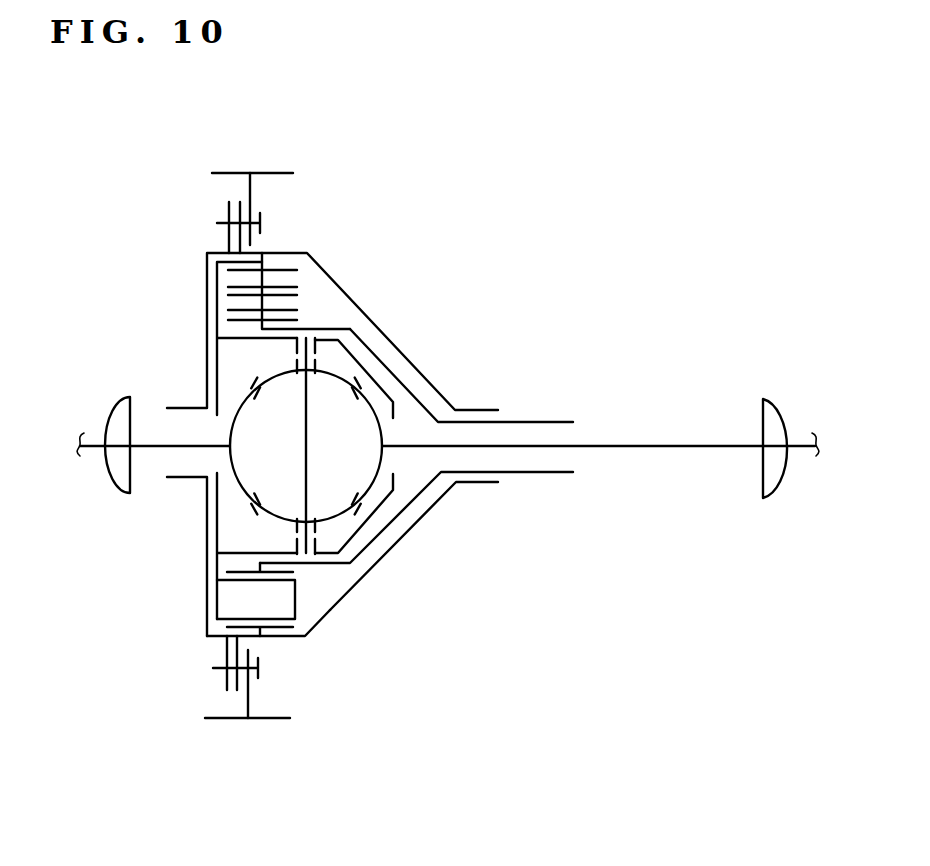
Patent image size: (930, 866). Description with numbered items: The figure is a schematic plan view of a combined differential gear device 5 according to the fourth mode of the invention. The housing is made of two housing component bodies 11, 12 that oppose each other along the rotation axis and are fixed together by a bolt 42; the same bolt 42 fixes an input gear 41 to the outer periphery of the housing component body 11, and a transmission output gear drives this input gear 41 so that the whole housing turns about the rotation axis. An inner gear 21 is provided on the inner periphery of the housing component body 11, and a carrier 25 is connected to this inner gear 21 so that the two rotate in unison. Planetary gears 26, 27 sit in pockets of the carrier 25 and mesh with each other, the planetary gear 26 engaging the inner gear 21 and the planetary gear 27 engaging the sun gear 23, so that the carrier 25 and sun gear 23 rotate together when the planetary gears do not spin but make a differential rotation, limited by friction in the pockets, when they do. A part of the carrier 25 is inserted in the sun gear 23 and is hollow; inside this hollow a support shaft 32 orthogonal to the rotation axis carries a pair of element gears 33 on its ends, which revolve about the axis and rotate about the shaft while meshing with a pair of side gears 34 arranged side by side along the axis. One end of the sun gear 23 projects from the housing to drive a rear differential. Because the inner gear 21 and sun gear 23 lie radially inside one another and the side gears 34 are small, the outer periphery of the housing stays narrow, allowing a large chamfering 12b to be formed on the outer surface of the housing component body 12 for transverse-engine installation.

The combined differential gear device 5 is at (500, 253).
The housing component body 11 is at (205, 624).
The housing component body 12 is at (316, 628).
The chamfering 12b is at (363, 576).
The inner gear 21 is at (276, 266).
The sun gear 23 is at (336, 328).
The carrier 25 is at (208, 356).
The planetary gear 26 is at (265, 280).
The planetary gear 27 is at (265, 300).
The support shaft 32 is at (308, 440).
The element gear 33 is at (345, 378).
The side gear 34 is at (238, 486).
The input gear 41 is at (258, 722).
The bolt 42 is at (260, 223).